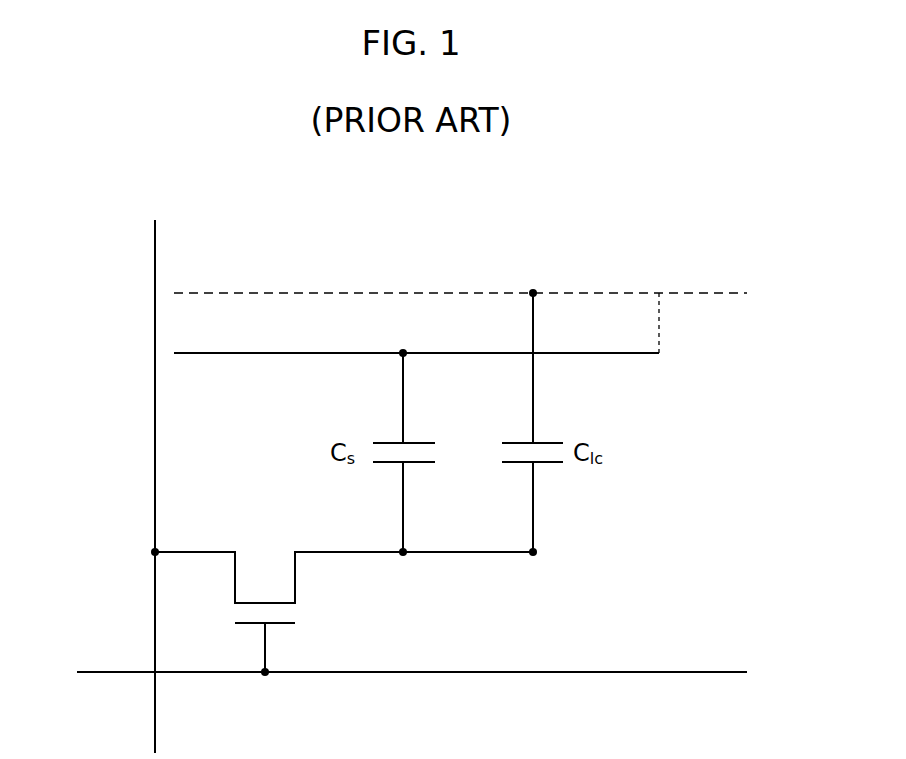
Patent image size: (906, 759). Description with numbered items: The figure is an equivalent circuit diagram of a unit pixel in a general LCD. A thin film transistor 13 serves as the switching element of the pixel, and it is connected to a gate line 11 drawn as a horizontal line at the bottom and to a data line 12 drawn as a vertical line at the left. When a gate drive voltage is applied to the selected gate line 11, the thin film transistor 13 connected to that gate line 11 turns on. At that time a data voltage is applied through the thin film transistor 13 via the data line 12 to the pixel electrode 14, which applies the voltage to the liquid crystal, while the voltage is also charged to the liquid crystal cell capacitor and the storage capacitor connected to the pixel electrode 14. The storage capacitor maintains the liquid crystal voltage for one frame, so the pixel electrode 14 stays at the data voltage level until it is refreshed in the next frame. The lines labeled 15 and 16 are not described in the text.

The gate line 11 is at (108, 671).
The data line 12 is at (155, 325).
The thin film transistor 13 is at (312, 600).
The pixel electrode 14 is at (473, 562).
The common line 15 is at (541, 281).
The storage line 16 is at (620, 354).